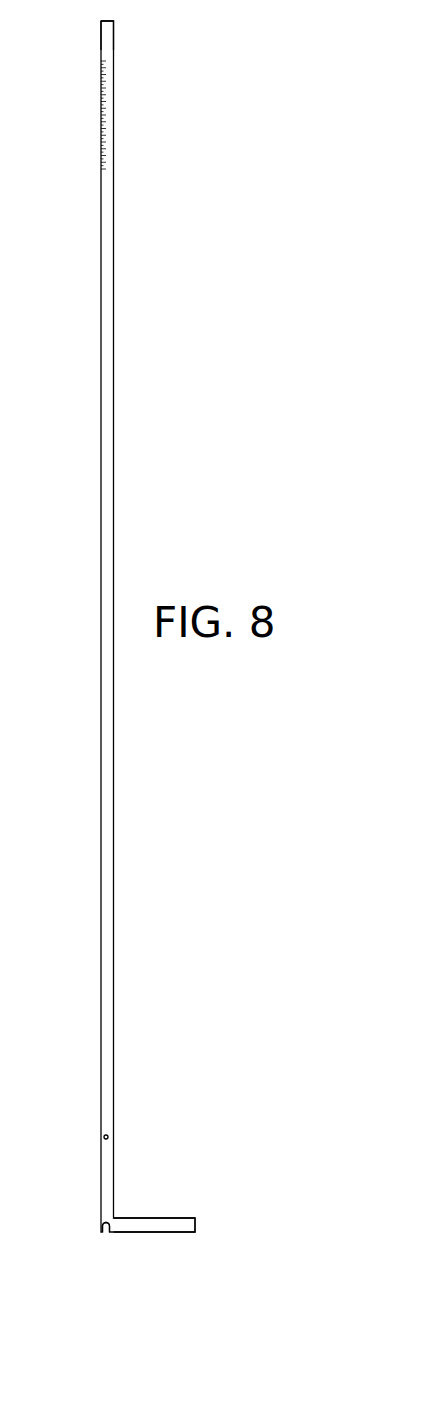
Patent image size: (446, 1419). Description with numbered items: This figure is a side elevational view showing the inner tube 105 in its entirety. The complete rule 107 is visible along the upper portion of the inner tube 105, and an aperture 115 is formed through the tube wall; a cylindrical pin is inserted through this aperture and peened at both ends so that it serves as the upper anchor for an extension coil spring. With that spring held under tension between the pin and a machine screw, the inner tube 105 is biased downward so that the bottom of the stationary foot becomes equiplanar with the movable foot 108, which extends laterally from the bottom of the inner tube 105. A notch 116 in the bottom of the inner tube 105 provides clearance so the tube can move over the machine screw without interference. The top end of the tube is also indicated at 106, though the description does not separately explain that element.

The inner tube 105 is at (105, 513).
The top end of bar 106 is at (105, 42).
The rule 107 is at (128, 108).
The movable foot 108 is at (157, 1225).
The aperture 115 is at (118, 1130).
The notch 116 is at (100, 1240).